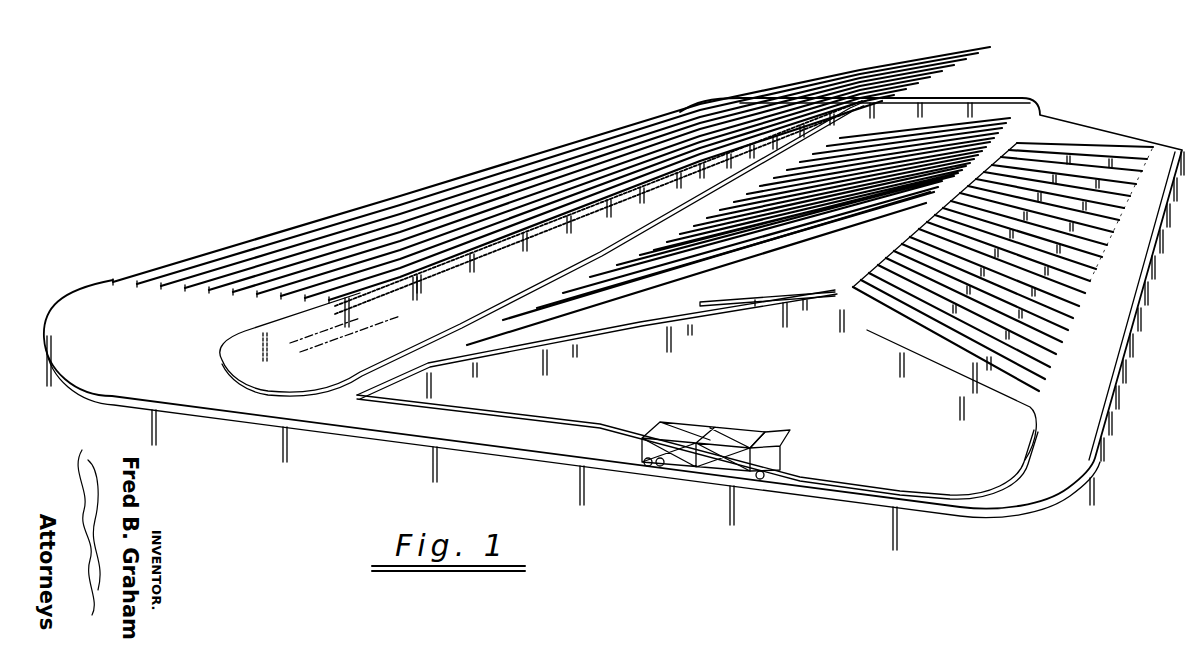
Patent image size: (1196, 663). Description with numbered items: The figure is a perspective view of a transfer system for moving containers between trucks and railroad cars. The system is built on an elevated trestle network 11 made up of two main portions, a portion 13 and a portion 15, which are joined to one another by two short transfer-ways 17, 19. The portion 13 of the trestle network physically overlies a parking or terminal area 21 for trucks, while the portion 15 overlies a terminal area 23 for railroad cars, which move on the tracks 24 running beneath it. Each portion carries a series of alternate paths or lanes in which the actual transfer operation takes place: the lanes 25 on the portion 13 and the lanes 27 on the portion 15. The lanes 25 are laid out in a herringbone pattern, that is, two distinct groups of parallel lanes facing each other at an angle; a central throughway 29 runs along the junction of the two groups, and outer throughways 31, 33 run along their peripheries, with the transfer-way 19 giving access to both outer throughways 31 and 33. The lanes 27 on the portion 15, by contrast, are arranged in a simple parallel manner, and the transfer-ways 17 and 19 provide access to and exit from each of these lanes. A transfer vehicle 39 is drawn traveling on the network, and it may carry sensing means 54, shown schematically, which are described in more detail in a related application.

The trestle network 11 is at (213, 428).
The portion of the trestle network 13 is at (1098, 117).
The portion of the trestle network 15 is at (302, 208).
The transfer-way 17 is at (936, 102).
The transfer-way 19 is at (275, 417).
The parking or terminal area 21 is at (861, 339).
The terminal area 23 is at (542, 252).
The tracks 24 is at (392, 292).
The lanes 25 is at (535, 300).
The lanes 27 is at (240, 296).
The central throughway 29 is at (950, 203).
The outer throughway 31 is at (612, 279).
The outer throughway 33 is at (1127, 279).
The transfer car 39 is at (698, 430).
The sensing means 54 is at (760, 479).